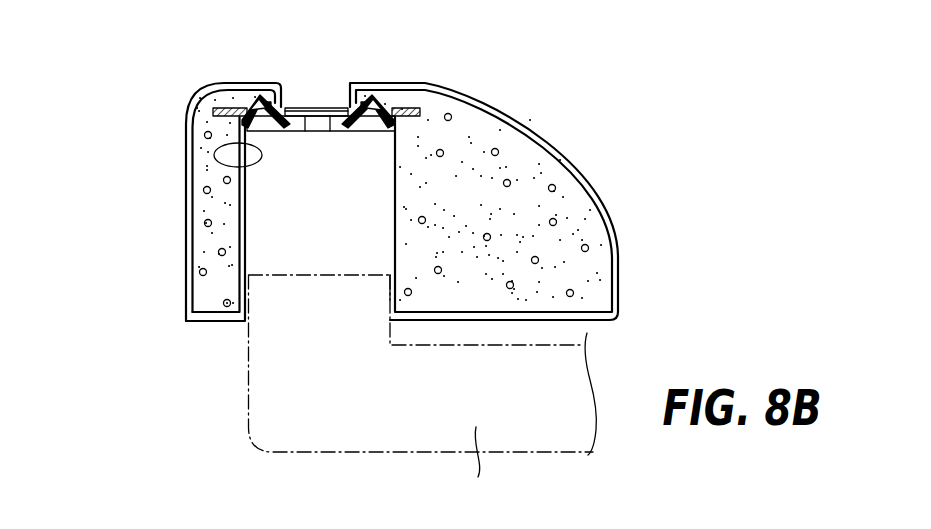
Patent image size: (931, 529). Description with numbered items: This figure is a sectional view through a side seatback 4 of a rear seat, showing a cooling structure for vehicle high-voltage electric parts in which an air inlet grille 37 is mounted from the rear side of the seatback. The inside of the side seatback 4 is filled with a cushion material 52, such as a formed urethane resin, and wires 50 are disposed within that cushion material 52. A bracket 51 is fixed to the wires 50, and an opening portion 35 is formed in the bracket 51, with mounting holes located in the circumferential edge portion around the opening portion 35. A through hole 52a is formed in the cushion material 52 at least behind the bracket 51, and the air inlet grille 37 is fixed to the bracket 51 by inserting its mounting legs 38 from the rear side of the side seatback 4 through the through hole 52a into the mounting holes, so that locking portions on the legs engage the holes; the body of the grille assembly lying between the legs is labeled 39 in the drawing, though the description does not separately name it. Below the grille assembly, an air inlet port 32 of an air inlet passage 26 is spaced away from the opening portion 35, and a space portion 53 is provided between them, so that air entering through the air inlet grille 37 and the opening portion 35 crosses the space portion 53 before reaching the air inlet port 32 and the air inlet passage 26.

The side seatback 4 is at (555, 143).
The air inlet passage 26 is at (477, 466).
The air inlet port 32 is at (288, 290).
The opening portion 35 is at (303, 106).
The air inlet grille 37 is at (362, 131).
The mounting legs 38 is at (258, 96).
The seal body 39 is at (314, 131).
The wires 50 is at (410, 107).
The bracket 51 is at (337, 107).
The cushion material 52 is at (557, 222).
The through hole 52a is at (245, 167).
The space portion 53 is at (283, 206).